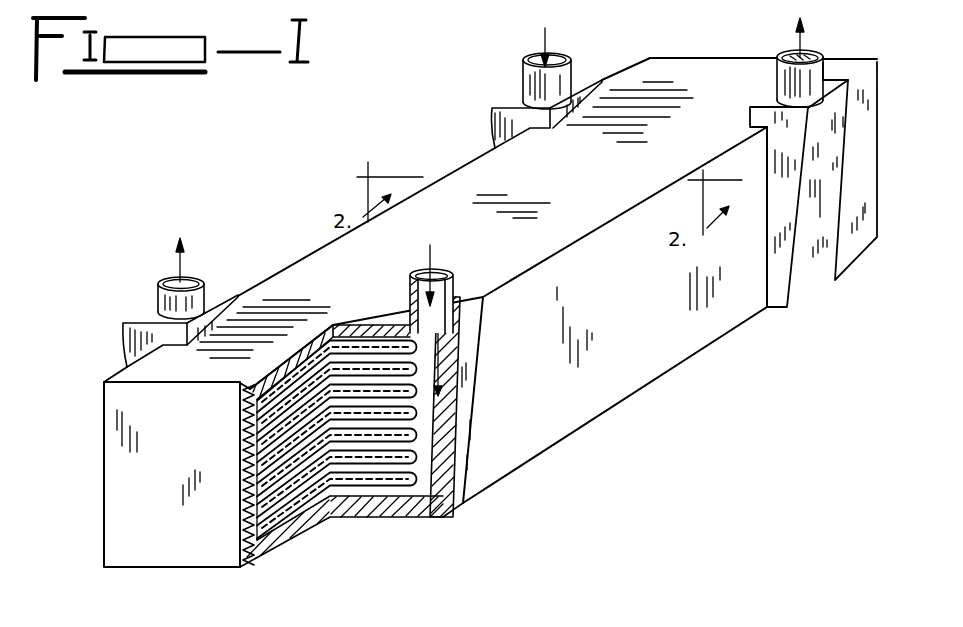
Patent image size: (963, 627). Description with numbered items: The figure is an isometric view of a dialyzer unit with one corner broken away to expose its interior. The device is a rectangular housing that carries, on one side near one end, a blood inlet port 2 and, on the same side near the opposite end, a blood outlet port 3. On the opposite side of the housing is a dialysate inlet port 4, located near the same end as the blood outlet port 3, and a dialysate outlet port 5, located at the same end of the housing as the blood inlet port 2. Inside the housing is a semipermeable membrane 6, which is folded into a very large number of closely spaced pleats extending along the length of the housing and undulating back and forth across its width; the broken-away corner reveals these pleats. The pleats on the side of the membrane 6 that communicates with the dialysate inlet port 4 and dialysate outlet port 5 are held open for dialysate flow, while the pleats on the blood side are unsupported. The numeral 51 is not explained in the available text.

The blood inlet port 2 is at (470, 343).
The blood outlet port 3 is at (815, 282).
The dialysate inlet port 4 is at (520, 102).
The dialysate outlet port 5 is at (148, 316).
The semipermeable membrane 6 is at (423, 402).
The housing 51 is at (650, 372).